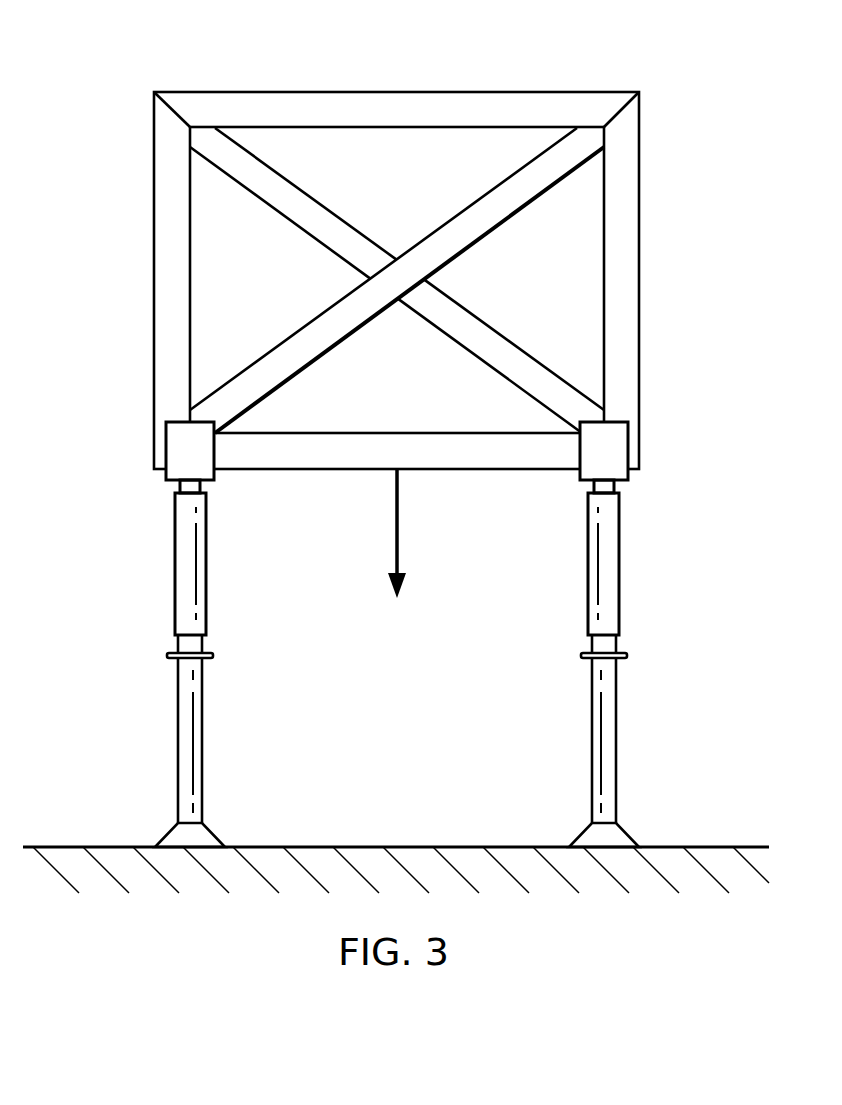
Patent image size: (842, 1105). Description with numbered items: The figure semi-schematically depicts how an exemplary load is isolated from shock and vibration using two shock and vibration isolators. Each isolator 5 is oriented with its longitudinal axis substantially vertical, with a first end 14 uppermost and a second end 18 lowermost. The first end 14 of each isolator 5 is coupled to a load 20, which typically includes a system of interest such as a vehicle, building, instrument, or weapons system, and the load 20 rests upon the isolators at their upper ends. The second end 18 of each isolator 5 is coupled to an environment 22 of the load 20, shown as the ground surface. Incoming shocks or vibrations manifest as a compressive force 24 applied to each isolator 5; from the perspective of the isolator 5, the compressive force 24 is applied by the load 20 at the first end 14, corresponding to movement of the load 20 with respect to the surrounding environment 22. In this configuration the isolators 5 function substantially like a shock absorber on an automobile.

The isolator 5 is at (118, 605).
The first end 14 is at (236, 514).
The second end 18 is at (143, 806).
The load 20 is at (279, 92).
The environment 22 is at (415, 855).
The compressive force 24 is at (396, 528).